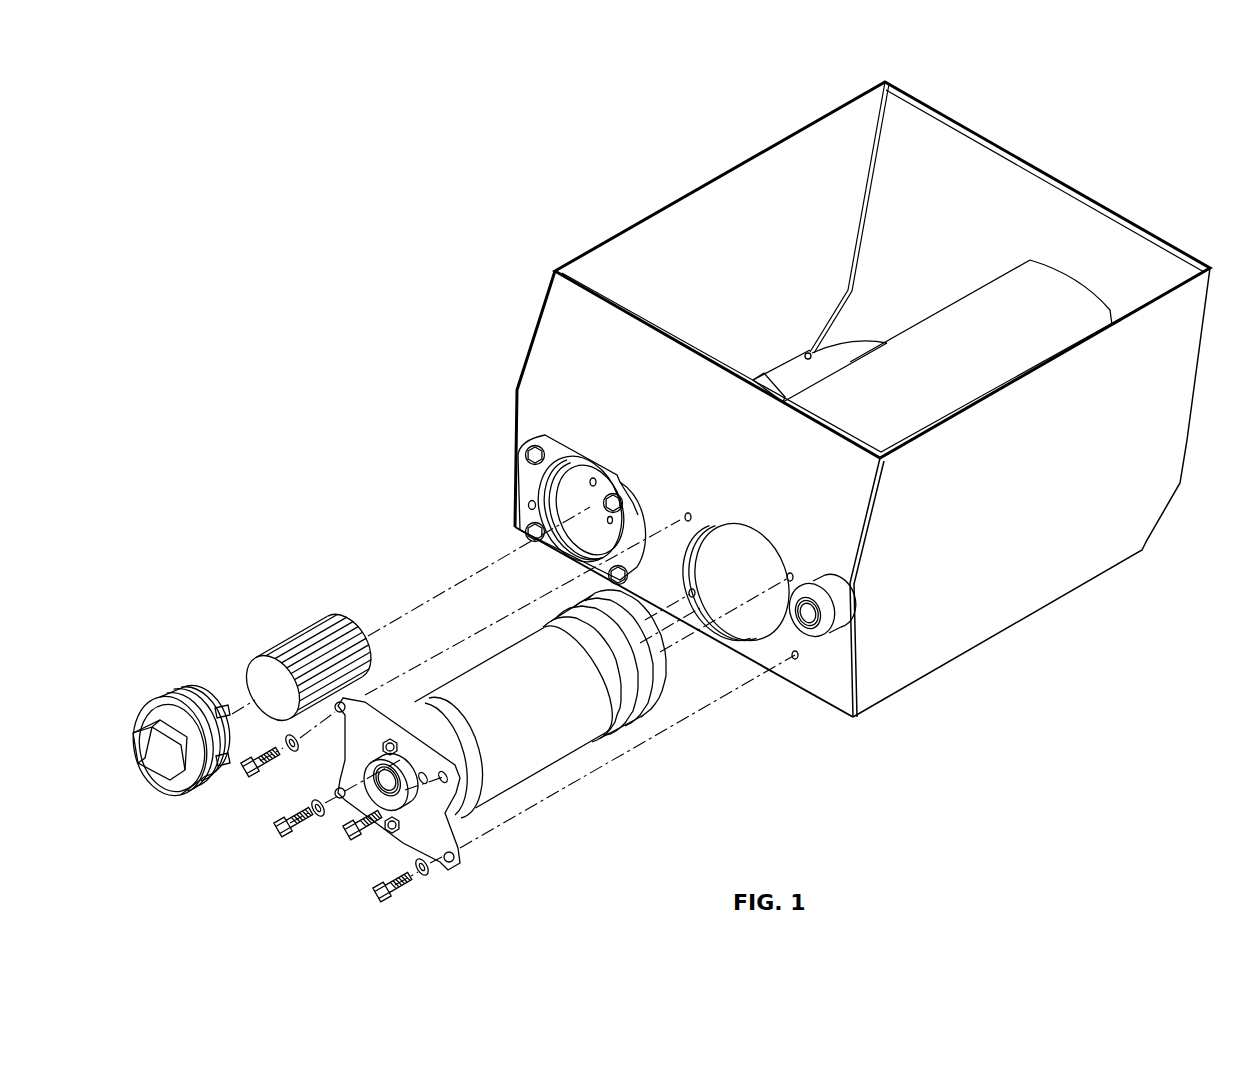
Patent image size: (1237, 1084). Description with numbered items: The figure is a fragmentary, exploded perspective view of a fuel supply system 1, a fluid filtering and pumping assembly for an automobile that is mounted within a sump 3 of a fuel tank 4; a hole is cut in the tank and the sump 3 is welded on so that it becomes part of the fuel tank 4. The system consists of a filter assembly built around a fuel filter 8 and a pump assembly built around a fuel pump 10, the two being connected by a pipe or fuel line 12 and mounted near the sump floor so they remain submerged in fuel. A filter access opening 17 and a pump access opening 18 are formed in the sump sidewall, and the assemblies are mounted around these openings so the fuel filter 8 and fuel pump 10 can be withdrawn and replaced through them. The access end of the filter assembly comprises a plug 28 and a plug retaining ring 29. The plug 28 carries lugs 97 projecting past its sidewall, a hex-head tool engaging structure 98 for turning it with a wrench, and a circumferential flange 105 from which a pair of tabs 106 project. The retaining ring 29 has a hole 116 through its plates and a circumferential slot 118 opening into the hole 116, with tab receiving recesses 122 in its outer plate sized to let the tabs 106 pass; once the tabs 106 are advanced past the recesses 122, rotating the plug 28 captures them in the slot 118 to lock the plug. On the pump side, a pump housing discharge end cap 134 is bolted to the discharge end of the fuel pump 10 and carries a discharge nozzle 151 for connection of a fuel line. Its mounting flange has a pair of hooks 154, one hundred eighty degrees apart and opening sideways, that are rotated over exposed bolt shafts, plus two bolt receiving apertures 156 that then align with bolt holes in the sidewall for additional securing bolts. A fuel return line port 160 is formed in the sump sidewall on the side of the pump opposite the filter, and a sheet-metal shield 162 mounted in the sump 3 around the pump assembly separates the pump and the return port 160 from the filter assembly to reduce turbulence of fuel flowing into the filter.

The fuel supply system 1 is at (270, 265).
The sump 3 is at (1128, 215).
The fuel tank 4 is at (717, 177).
The fuel filter 8 is at (310, 635).
The fuel pump 10 is at (557, 747).
The fuel line 12 is at (857, 350).
The filter access opening 17 is at (552, 432).
The pump access opening 18 is at (748, 538).
The plug 28 is at (132, 717).
The plug retaining ring 29 is at (530, 483).
The lugs 97 is at (192, 697).
The tool engaging structure 98 is at (163, 762).
The circumferential flange 105 is at (207, 770).
The tabs 106 is at (220, 732).
The hole 116 is at (633, 503).
The circumferential slot 118 is at (580, 525).
The tab receiving recesses 122 is at (595, 485).
The pump housing discharge end cap 134 is at (463, 840).
The discharge nozzle 151 is at (377, 773).
The hooks 154 is at (387, 680).
The bolt receiving apertures 156 is at (472, 728).
The fuel return line port 160 is at (850, 613).
The shield 162 is at (993, 300).